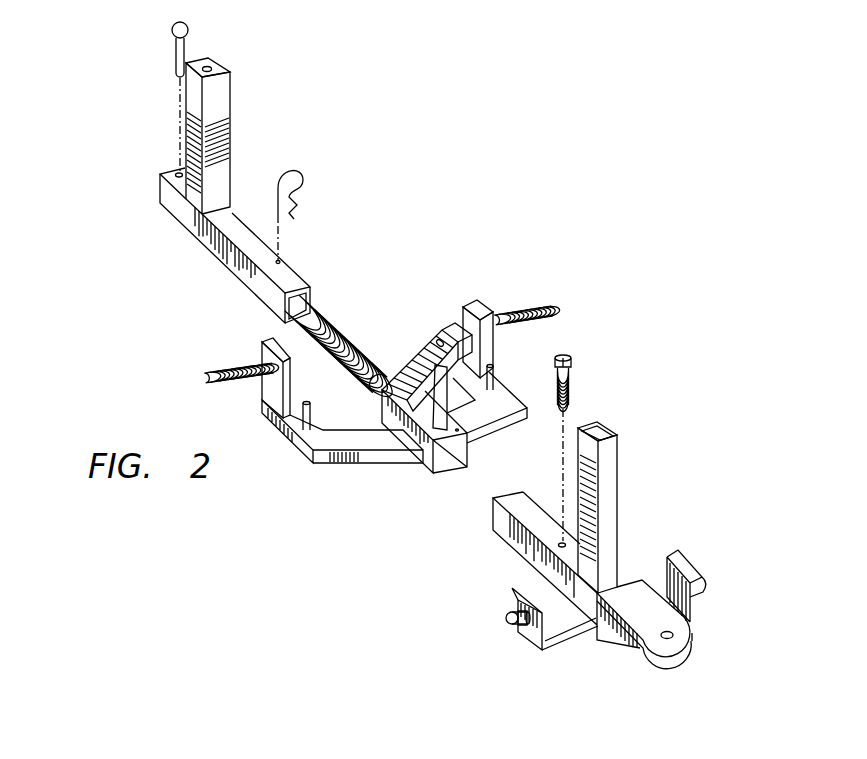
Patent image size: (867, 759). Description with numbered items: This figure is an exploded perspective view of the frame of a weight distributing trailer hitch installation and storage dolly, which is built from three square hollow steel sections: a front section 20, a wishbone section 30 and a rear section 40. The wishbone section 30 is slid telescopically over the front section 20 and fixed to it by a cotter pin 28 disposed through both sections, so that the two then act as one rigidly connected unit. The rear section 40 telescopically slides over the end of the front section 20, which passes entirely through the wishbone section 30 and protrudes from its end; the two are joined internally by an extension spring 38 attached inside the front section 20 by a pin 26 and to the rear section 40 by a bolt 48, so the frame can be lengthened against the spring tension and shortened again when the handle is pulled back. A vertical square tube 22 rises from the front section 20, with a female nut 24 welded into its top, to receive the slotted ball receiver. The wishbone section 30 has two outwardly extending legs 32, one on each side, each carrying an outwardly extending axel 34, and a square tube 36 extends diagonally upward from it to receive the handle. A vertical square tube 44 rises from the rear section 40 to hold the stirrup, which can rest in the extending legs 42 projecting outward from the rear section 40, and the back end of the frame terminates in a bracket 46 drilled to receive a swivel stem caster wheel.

The front section 20 is at (202, 246).
The vertical square tube 22 is at (231, 104).
The female nut 24 is at (211, 64).
The pin 26 is at (172, 33).
The cotter pin 28 is at (304, 178).
The wishbone section 30 is at (420, 437).
The legs 32 is at (332, 457).
The axel 34 is at (226, 368).
The square tube 36 is at (434, 330).
The extension spring 38 is at (339, 334).
The rear section 40 is at (521, 545).
The extending legs 42 is at (688, 620).
The vertical square tube 44 is at (618, 488).
The bracket 46 is at (684, 648).
The bolt 48 is at (572, 378).